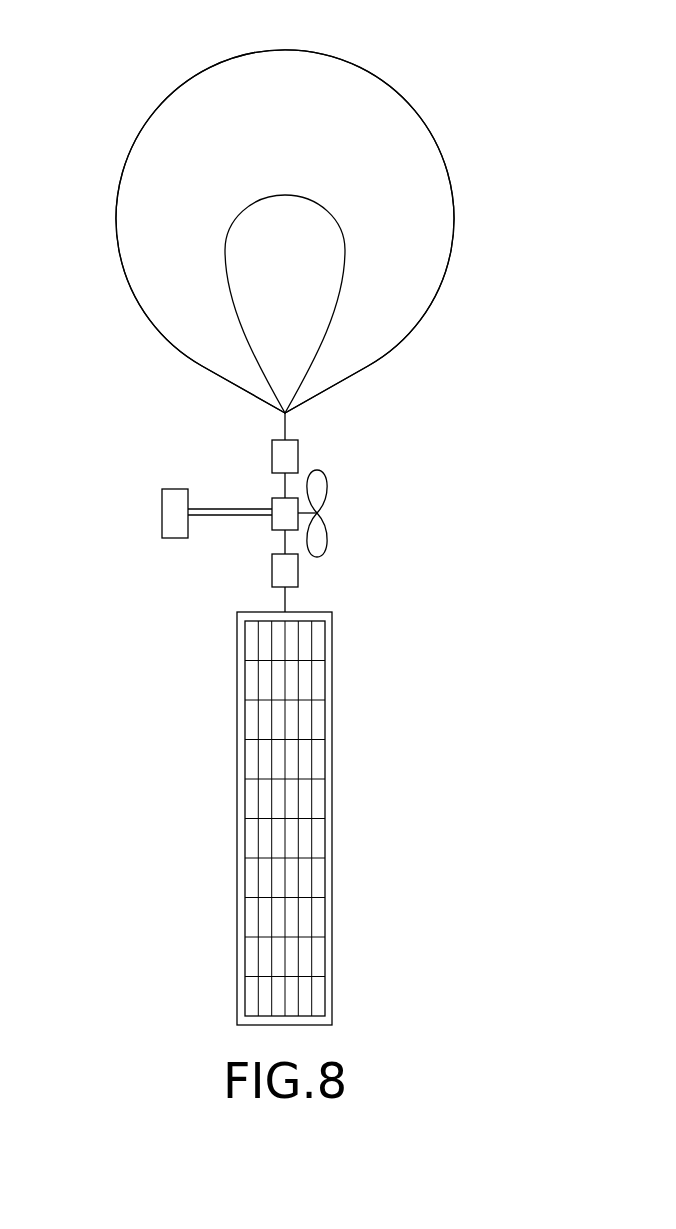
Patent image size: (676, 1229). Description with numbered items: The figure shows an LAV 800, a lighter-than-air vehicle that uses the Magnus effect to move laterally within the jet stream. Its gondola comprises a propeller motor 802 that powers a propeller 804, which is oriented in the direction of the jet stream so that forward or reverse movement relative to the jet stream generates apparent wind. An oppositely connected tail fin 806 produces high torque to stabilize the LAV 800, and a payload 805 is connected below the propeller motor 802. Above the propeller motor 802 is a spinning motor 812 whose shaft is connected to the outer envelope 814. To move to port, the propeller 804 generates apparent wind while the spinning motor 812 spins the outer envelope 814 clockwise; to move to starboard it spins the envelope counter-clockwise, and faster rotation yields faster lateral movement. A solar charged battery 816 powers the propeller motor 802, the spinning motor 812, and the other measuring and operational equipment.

The LAV 800 is at (114, 82).
The outer envelope 814 is at (462, 125).
The spinning motor 812 is at (299, 456).
The propeller motor 802 is at (277, 505).
The propeller 804 is at (325, 490).
The tail fin 806 is at (170, 509).
The payload 805 is at (299, 568).
The solar charged battery 816 is at (362, 817).